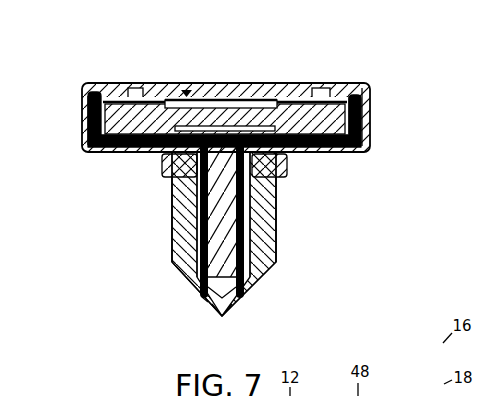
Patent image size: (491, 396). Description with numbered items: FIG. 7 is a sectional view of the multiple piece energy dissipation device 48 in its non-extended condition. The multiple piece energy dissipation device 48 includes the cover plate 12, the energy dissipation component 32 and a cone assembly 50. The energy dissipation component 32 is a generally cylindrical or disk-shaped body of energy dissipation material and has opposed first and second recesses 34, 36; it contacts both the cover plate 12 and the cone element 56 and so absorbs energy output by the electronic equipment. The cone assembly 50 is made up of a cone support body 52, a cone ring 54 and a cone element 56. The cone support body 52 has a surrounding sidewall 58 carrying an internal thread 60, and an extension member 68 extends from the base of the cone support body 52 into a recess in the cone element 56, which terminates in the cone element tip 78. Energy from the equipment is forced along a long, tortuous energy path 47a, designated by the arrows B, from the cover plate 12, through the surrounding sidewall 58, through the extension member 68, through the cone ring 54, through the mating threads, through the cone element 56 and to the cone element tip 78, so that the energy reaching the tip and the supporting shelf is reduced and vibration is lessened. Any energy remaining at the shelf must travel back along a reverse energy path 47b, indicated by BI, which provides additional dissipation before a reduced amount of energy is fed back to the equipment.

The cover plate 12 is at (283, 84).
The energy dissipation component 32 is at (368, 105).
The first recess 34 is at (186, 93).
The second recess 36 is at (163, 170).
The energy path 47a is at (177, 205).
The reverse energy path 47b is at (366, 100).
The multiple piece energy dissipation device 48 is at (362, 86).
The cone assembly 50 is at (278, 202).
The cone support body 52 is at (373, 134).
The cone ring 54 is at (288, 163).
The cone element 56 is at (276, 252).
The surrounding sidewall 58 is at (90, 97).
The internal thread 60 is at (371, 113).
The extension member 68 is at (272, 226).
The cone element tip 78 is at (222, 312).
The arrows designating the energy path B is at (202, 297).
The indication of the reverse energy path BI is at (276, 178).